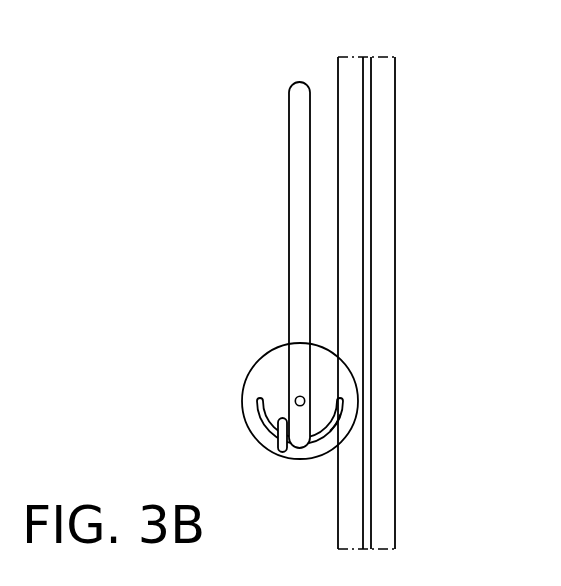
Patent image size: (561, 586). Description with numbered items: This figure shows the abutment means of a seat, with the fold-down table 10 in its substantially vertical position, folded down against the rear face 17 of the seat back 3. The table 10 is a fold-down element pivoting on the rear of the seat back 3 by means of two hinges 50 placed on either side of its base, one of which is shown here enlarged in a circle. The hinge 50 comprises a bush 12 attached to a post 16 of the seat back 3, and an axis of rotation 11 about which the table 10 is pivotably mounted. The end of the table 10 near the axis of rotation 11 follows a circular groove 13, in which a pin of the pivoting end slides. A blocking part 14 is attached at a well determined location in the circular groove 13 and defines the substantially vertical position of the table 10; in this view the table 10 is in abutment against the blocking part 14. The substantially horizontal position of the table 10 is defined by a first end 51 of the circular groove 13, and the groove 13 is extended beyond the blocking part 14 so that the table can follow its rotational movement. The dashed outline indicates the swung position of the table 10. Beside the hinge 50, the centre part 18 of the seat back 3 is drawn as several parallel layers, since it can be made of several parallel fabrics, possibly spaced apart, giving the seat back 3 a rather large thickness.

The seat back 3 is at (179, 262).
The table 10 is at (302, 195).
The axis of rotation 11 is at (296, 398).
The bush 12 is at (288, 401).
The circular groove 13 is at (331, 428).
The blocking part 14 is at (277, 443).
The post 16 is at (345, 293).
The rear face 17 is at (337, 137).
The centre part 18 is at (368, 180).
The hinge 50 is at (295, 463).
The first end 51 is at (341, 399).